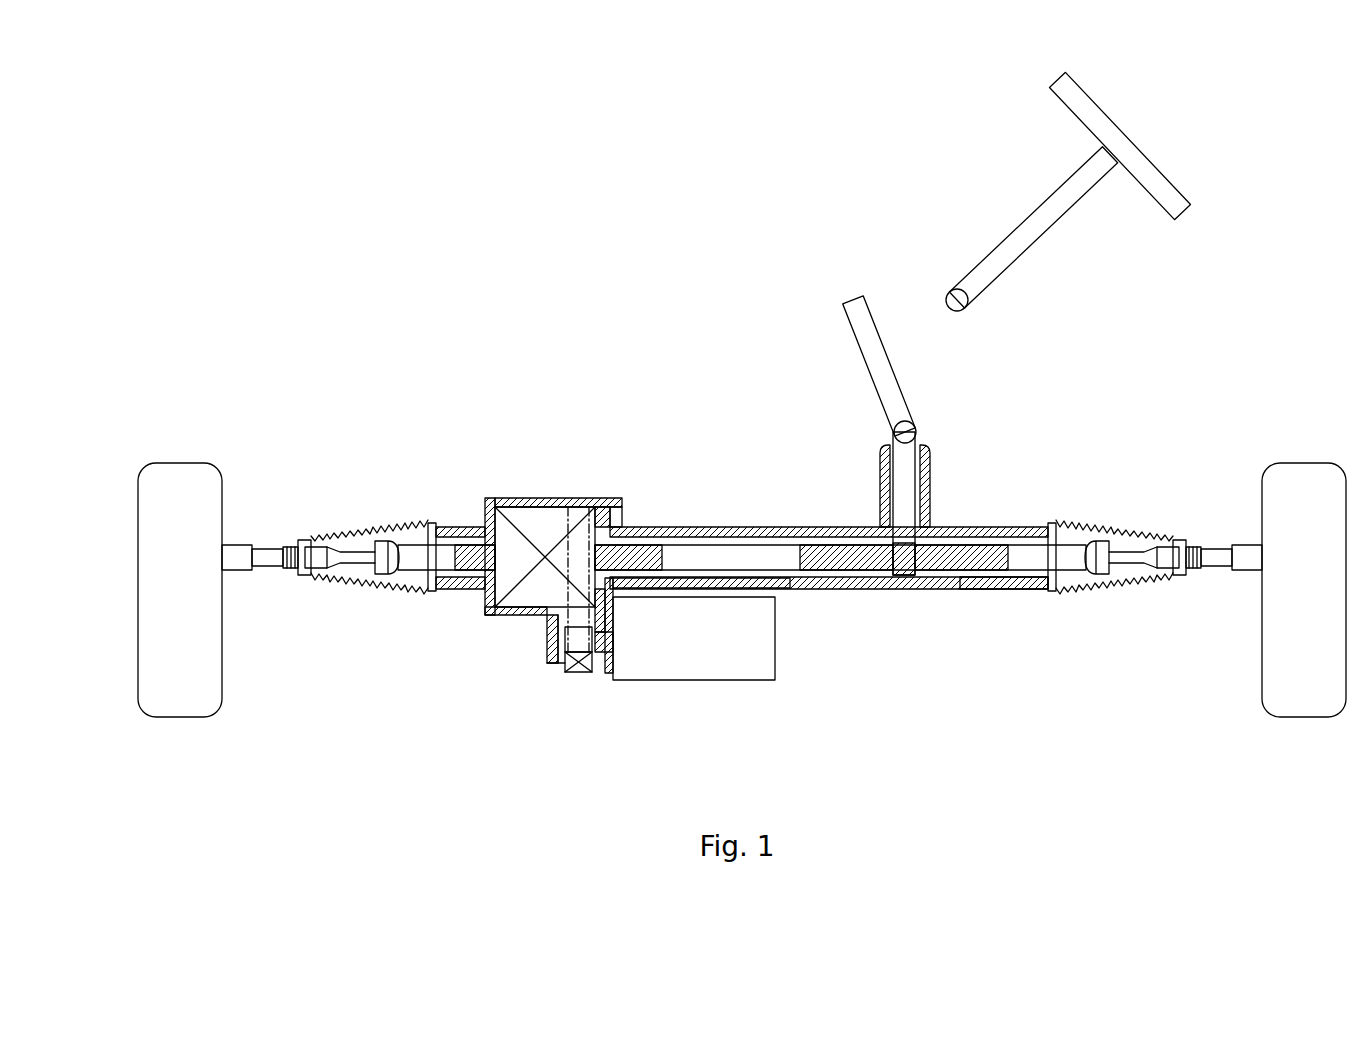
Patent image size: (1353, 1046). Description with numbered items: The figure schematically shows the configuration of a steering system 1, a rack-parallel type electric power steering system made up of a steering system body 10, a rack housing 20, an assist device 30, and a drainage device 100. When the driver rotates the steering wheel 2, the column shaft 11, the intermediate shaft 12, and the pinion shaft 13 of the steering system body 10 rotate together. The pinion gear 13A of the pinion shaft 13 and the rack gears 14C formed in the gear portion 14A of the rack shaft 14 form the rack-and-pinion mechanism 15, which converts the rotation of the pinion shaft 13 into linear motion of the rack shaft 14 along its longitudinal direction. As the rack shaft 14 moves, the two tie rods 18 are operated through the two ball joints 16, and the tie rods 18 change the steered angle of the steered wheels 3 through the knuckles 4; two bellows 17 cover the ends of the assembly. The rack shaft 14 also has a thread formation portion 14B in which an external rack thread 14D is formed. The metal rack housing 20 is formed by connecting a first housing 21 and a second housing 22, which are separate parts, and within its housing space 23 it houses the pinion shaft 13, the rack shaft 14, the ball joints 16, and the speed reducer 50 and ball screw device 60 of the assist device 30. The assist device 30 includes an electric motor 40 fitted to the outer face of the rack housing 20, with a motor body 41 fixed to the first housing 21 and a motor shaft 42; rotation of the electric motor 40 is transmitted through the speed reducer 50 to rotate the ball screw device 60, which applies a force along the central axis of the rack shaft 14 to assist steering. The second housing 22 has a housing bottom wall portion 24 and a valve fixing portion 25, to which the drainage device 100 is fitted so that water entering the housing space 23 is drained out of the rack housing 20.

The steering system 1 is at (497, 212).
The steering wheel 2 is at (1148, 158).
The steered wheels 3 is at (184, 470).
The knuckles 4 is at (244, 562).
The steering system body 10 is at (757, 406).
The column shaft 11 is at (1032, 218).
The intermediate shaft 12 is at (928, 360).
The pinion shaft 13 is at (896, 460).
The pinion gear 13A is at (900, 540).
The rack shaft 14 is at (742, 556).
The gear portion 14A is at (842, 546).
The thread formation portion 14B is at (636, 532).
The rack gears 14C is at (966, 552).
The rack thread 14D is at (663, 565).
The rack-and-pinion mechanism 15 is at (944, 503).
The ball joints 16 is at (391, 566).
The bellows 17 is at (330, 530).
The tie rods 18 is at (322, 564).
The rack housing 20 is at (637, 537).
The first housing 21 is at (684, 558).
The second housing 22 is at (536, 498).
The housing space 23 is at (998, 579).
The housing bottom wall portion 24 is at (551, 658).
The valve fixing portion 25 is at (563, 664).
The assist device 30 is at (460, 700).
The electric motor 40 is at (685, 681).
The motor body 41 is at (620, 722).
The motor shaft 42 is at (612, 652).
The speed reducer 50 is at (552, 633).
The ball screw device 60 is at (487, 518).
The drainage device 100 is at (578, 673).